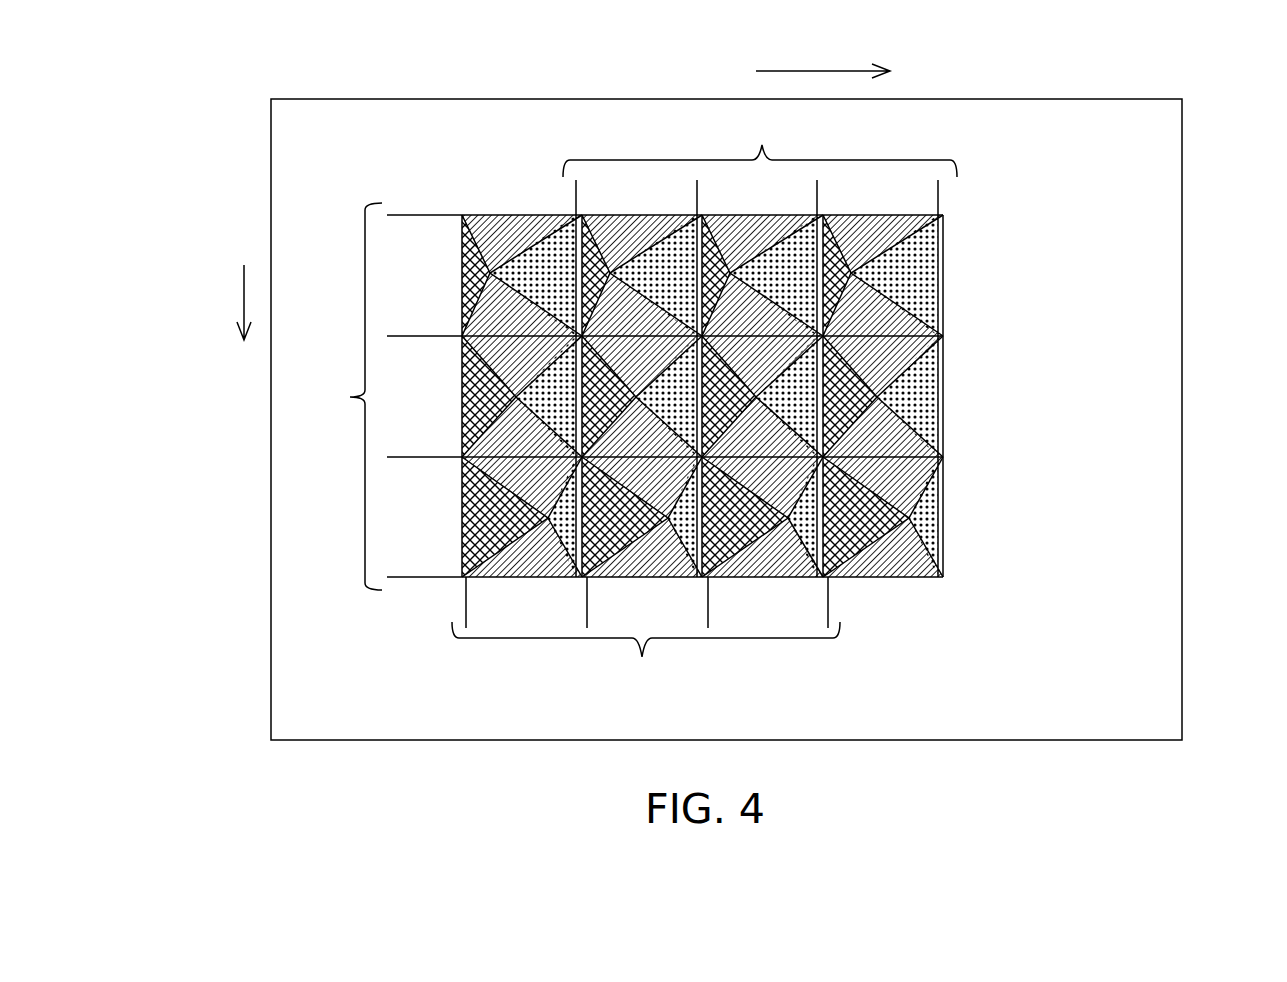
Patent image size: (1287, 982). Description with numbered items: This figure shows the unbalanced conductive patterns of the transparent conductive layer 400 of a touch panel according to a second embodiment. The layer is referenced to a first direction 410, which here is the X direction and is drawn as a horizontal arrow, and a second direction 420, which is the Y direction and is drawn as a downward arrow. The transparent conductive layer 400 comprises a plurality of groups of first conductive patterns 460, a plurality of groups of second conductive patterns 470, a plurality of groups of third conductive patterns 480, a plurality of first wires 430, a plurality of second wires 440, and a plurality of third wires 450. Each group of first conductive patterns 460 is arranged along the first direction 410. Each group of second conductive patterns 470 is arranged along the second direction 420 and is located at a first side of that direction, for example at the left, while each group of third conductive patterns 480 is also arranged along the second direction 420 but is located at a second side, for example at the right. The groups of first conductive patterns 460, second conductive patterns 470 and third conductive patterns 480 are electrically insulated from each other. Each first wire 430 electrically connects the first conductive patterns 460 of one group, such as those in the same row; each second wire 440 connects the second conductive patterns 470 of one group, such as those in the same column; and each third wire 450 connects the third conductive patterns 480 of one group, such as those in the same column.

The transparent conductive layer 400 is at (1182, 178).
The first direction 410 is at (821, 71).
The second direction 420 is at (244, 290).
The first wire 430 is at (350, 397).
The second wire 440 is at (762, 146).
The third wire 450 is at (642, 657).
The first conductive pattern 460 is at (880, 427).
The second conductive pattern 470 is at (912, 272).
The third conductive pattern 480 is at (893, 545).